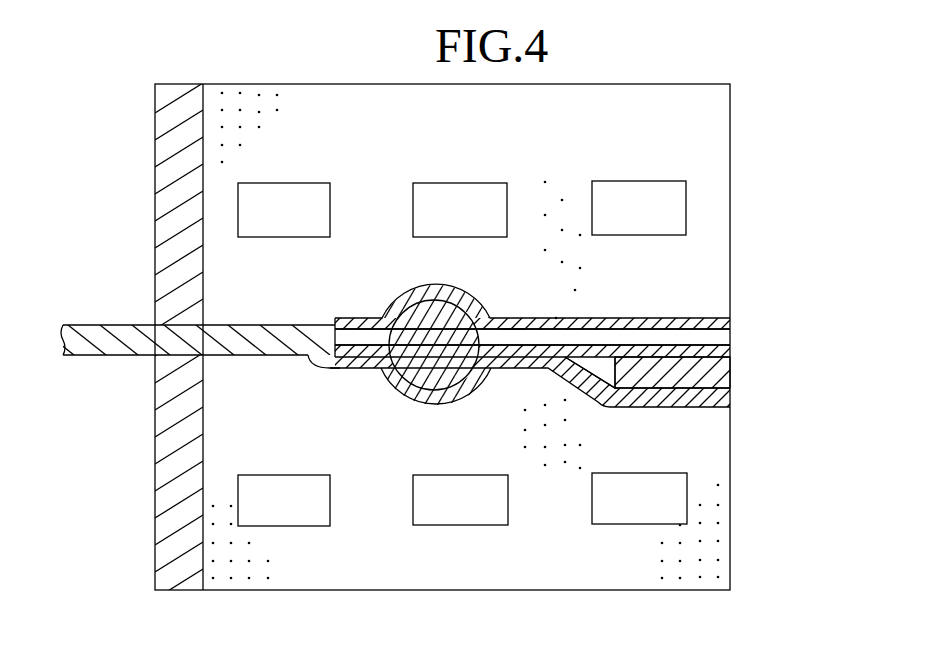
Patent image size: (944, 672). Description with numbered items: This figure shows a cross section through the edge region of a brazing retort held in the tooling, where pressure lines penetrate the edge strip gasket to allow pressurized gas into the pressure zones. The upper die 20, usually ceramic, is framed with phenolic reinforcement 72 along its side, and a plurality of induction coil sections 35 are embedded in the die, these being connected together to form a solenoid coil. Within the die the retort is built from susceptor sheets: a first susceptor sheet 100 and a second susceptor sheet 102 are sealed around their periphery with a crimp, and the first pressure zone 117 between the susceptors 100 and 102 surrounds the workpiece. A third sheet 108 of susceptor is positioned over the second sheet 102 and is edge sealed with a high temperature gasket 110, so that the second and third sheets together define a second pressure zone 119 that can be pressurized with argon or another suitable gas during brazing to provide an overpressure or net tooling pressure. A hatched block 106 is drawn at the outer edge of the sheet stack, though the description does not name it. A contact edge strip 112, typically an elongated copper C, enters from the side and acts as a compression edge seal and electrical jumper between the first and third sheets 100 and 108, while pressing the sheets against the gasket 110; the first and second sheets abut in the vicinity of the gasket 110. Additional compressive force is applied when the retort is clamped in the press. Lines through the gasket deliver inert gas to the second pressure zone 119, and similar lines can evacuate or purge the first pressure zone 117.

The upper die 20 is at (672, 592).
The induction coil sections 35 is at (304, 186).
The phenolic reinforcement 72 is at (155, 492).
The first susceptor sheet 100 is at (732, 403).
The second susceptor sheet 102 is at (733, 345).
The conductive block 106 is at (732, 374).
The third susceptor sheet 108 is at (730, 318).
The high temperature gasket 110 is at (413, 367).
The contact edge strip 112 is at (103, 358).
The first pressure zone 117 is at (603, 368).
The second pressure zone 119 is at (513, 340).